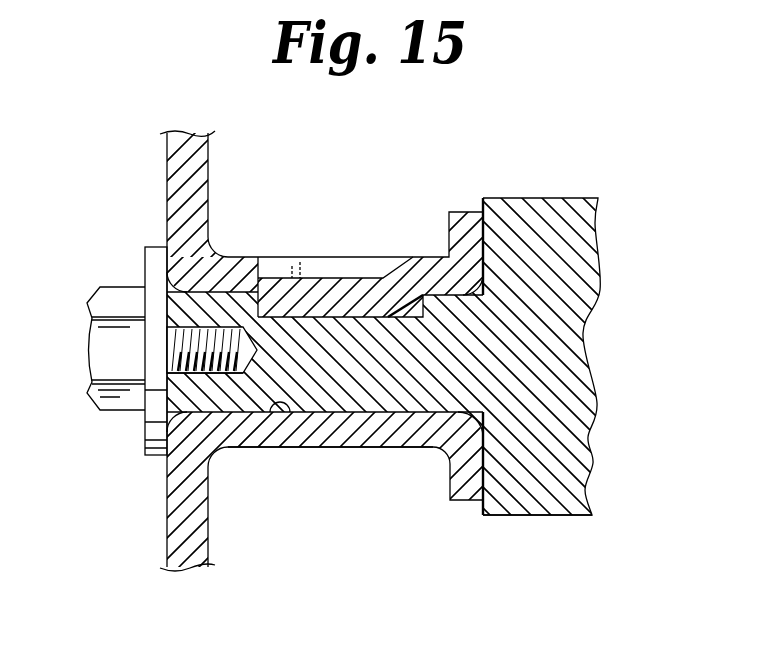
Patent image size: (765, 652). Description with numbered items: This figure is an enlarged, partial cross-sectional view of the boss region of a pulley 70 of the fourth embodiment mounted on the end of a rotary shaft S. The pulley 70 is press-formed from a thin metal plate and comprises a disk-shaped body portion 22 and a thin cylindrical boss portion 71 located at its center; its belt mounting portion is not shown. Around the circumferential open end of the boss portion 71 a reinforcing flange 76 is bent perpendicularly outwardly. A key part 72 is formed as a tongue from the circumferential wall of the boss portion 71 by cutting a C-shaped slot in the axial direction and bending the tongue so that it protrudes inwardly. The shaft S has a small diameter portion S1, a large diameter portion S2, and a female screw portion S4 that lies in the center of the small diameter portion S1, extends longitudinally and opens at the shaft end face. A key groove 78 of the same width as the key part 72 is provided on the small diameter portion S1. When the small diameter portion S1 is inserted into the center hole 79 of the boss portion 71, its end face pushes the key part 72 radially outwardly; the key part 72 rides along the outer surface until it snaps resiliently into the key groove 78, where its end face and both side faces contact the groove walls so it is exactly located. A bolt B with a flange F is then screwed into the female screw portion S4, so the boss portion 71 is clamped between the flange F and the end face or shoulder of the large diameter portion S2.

The body portion 22 is at (173, 153).
The pulley 70 is at (232, 250).
The boss portion 71 is at (348, 438).
The key part 72 is at (333, 284).
The reinforcing flange 76 is at (465, 222).
The key groove 78 is at (425, 300).
The center hole 79 is at (281, 418).
The small diameter portion S1 is at (419, 378).
The large diameter portion S2 is at (541, 218).
The female screw portion S4 is at (238, 375).
The rotary shaft S is at (500, 531).
The flange F is at (153, 267).
The bolt B is at (110, 350).